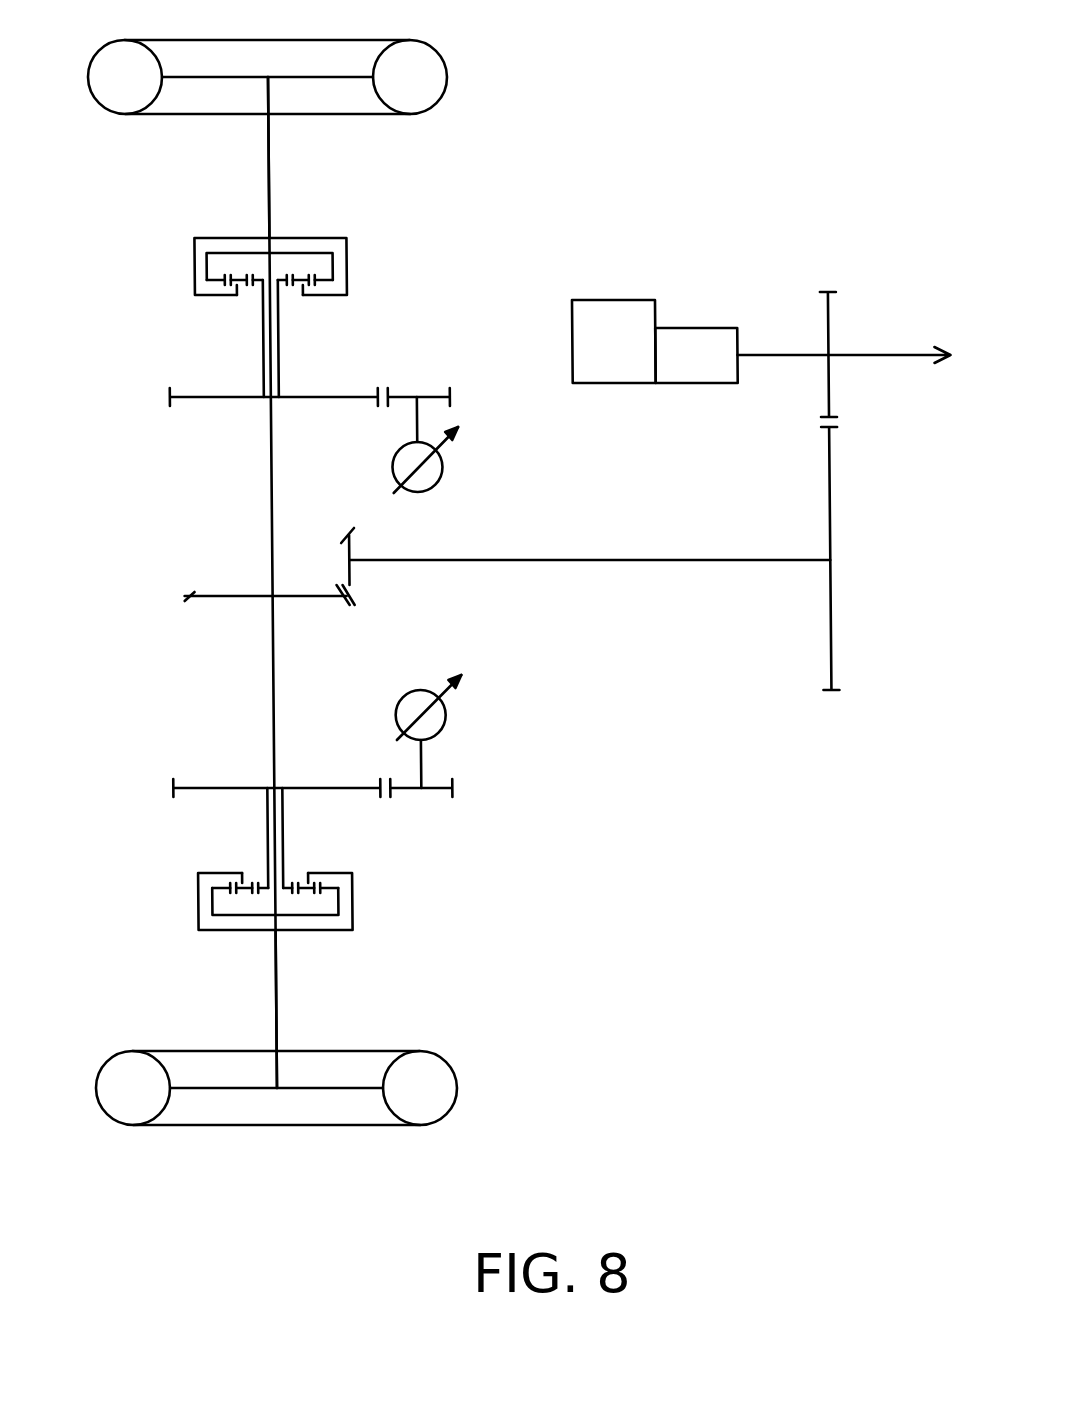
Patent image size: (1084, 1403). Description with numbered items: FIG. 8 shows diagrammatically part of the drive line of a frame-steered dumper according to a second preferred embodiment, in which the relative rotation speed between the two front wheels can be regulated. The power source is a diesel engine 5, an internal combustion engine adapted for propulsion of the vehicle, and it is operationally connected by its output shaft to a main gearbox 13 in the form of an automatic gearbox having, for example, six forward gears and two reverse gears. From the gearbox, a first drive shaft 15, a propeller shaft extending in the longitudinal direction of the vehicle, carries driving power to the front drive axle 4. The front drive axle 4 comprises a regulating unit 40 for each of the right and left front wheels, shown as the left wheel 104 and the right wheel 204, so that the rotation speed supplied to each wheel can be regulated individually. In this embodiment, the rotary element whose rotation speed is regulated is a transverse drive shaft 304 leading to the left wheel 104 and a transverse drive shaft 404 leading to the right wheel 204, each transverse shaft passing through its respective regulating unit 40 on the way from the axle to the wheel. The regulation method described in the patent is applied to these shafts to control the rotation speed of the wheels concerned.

The front drive axle 4 is at (275, 1163).
The diesel engine 5 is at (605, 267).
The main gearbox 13 is at (712, 288).
The first drive shaft 15 is at (644, 560).
The regulating unit 40 is at (390, 298).
The left front wheel 104 is at (448, 1088).
The right front wheel 204 is at (449, 68).
The transverse drive shaft 304 is at (267, 1000).
The transverse drive shaft 404 is at (268, 170).